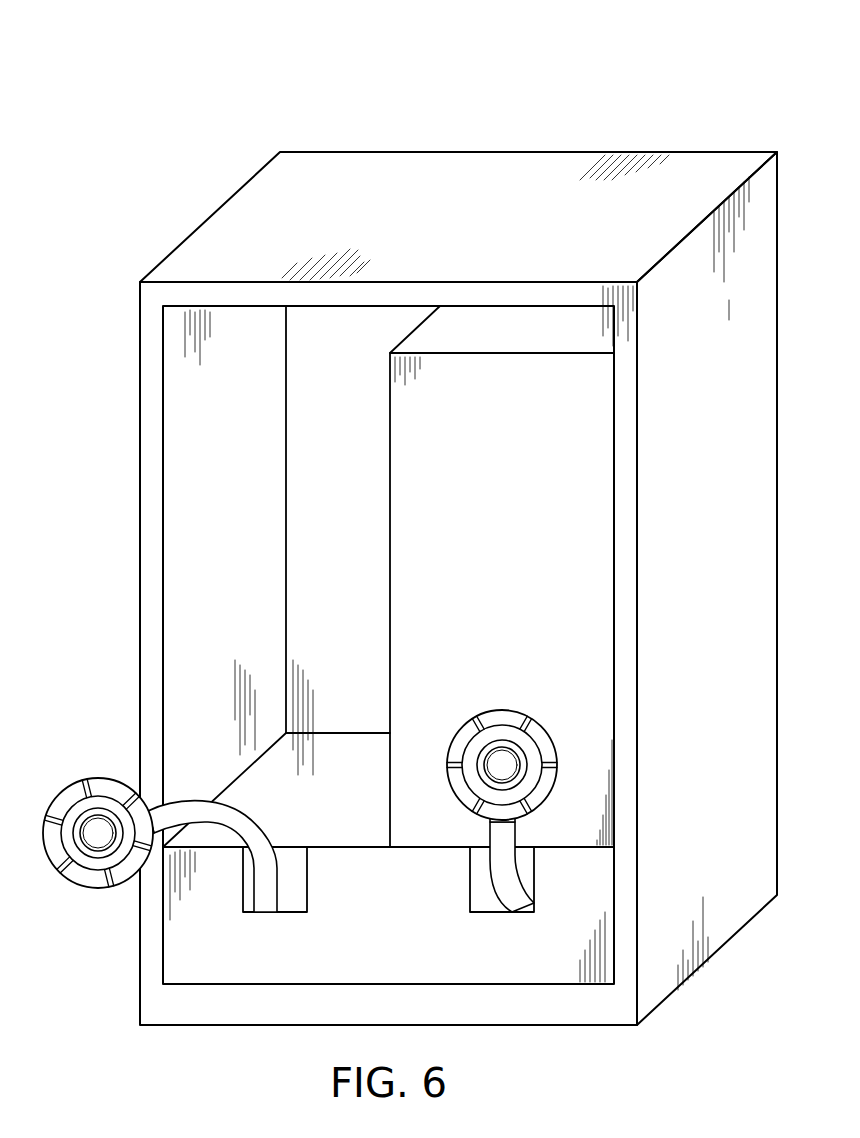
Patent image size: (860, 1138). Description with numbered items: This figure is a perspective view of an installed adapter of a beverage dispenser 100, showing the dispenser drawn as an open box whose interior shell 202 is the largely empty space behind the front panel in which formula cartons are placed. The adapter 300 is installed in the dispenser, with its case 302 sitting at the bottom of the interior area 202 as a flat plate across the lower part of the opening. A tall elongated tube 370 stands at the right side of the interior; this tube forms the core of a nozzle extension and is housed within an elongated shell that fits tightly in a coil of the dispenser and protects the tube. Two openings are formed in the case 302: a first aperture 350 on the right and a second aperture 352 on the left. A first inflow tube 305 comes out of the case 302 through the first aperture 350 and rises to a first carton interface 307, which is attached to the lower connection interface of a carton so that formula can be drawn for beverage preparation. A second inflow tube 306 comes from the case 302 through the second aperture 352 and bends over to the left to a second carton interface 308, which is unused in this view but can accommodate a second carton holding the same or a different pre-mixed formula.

The beverage dispenser 100 is at (402, 554).
The interior shell 202 is at (140, 490).
The adapter 300 is at (388, 697).
The case 302 is at (410, 933).
The first inflow tube 305 is at (493, 887).
The second inflow tube 306 is at (270, 833).
The first carton interface 307 is at (508, 708).
The second carton interface 308 is at (80, 787).
The first aperture 350 is at (470, 853).
The second aperture 352 is at (302, 898).
The elongated tube 370 is at (523, 535).